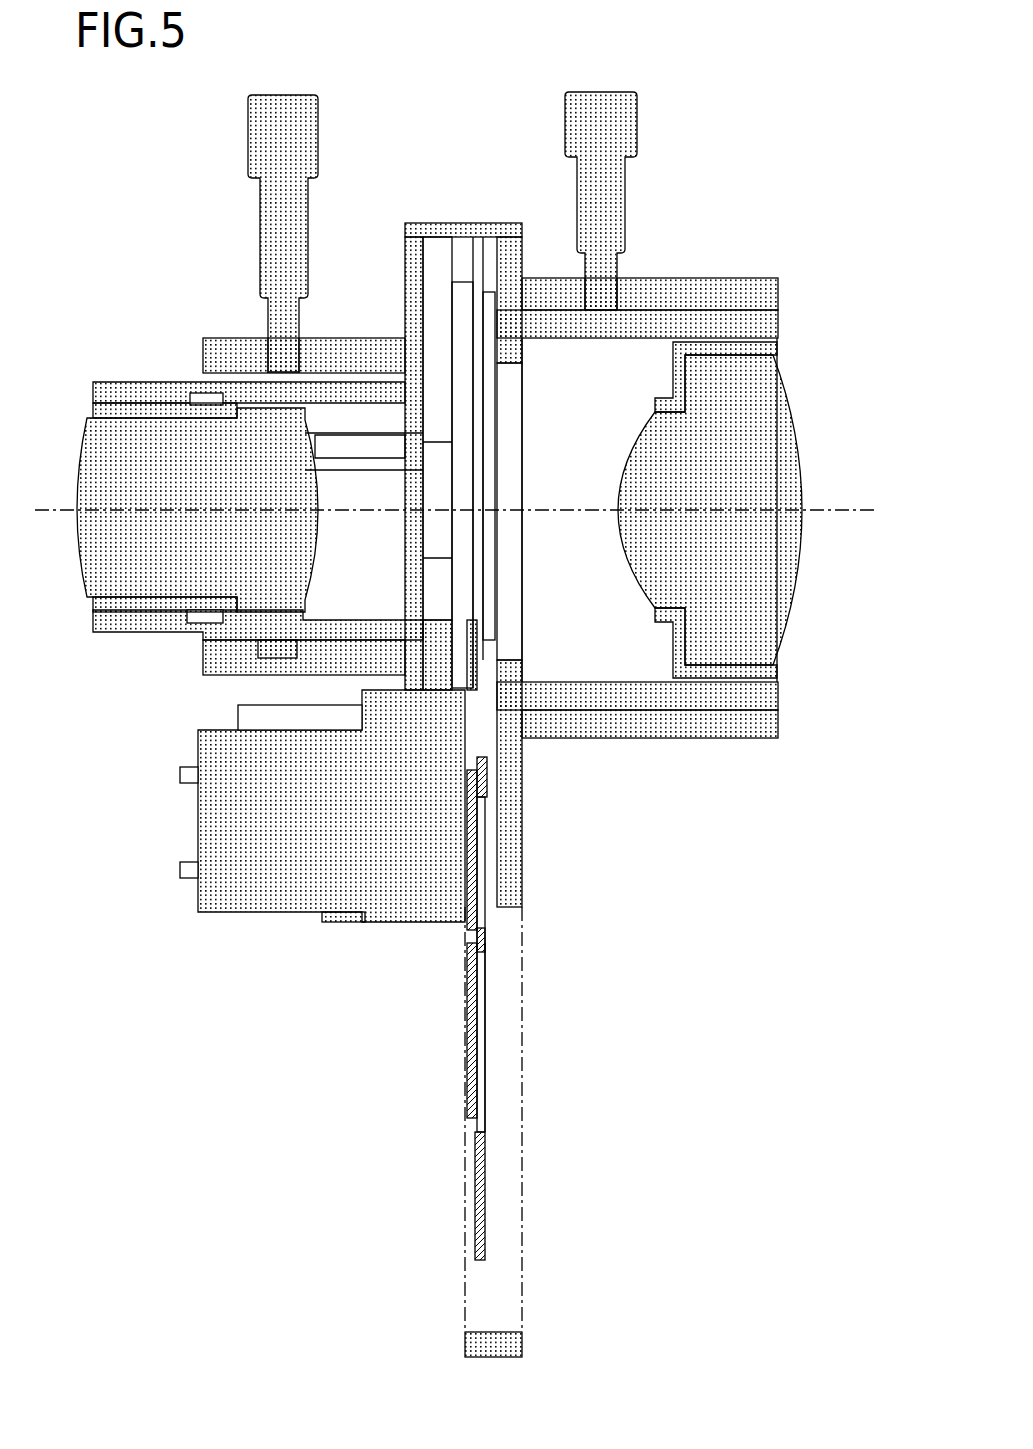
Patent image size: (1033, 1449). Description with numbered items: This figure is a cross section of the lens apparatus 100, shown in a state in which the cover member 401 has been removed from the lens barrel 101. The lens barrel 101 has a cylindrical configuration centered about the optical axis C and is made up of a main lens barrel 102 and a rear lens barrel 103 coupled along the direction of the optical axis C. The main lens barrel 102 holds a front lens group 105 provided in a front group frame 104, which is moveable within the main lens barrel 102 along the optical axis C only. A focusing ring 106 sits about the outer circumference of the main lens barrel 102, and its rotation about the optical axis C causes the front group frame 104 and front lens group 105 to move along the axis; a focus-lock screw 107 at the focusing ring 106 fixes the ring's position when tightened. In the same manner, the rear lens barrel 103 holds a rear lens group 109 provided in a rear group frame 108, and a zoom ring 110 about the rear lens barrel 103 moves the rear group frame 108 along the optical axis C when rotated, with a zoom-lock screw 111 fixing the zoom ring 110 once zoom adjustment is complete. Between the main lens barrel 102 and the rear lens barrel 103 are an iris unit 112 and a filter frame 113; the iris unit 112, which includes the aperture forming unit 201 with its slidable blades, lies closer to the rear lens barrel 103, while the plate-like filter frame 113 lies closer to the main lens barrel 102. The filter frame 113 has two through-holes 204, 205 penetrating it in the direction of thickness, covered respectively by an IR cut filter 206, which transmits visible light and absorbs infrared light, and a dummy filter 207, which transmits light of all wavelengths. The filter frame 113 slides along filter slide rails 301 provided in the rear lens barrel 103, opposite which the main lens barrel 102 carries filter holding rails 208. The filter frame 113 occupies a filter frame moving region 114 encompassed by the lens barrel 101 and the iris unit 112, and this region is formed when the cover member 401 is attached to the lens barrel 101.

The lens apparatus 100 is at (746, 64).
The lens barrel 101 is at (512, 793).
The main lens barrel 102 is at (770, 322).
The rear lens barrel 103 is at (138, 382).
The front group frame 104 is at (770, 350).
The front lens group 105 is at (778, 575).
The focusing ring 106 is at (743, 292).
The focus-lock screw 107 is at (601, 91).
The rear group frame 108 is at (100, 413).
The rear lens group 109 is at (85, 548).
The zoom ring 110 is at (222, 338).
The zoom-lock screw 111 is at (283, 94).
The iris unit 112 is at (236, 913).
The filter frame 113 is at (485, 1181).
The filter frame moving region 114 is at (482, 250).
The aperture forming unit 201 is at (430, 268).
The through-hole 204 is at (480, 917).
The through-hole 205 is at (480, 1032).
The IR cut filter 206 is at (472, 940).
The dummy filter 207 is at (467, 1057).
The filter holding rails 208 is at (466, 282).
The filter slide rails 301 is at (488, 293).
The cover member 401 is at (522, 1340).
The optical axis C is at (843, 507).